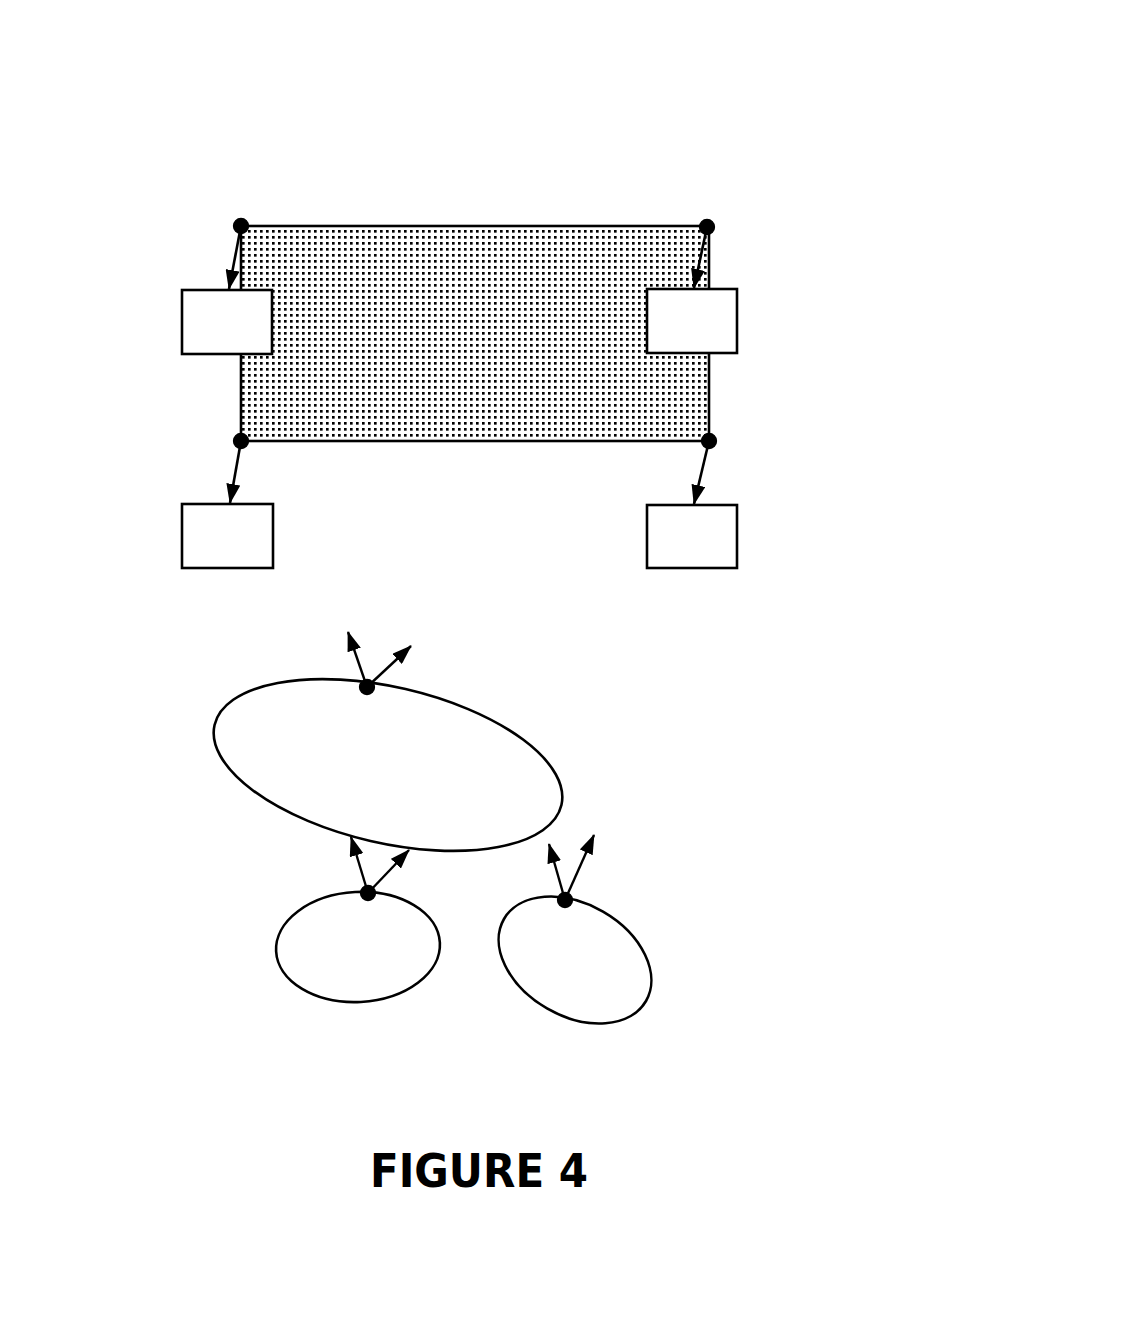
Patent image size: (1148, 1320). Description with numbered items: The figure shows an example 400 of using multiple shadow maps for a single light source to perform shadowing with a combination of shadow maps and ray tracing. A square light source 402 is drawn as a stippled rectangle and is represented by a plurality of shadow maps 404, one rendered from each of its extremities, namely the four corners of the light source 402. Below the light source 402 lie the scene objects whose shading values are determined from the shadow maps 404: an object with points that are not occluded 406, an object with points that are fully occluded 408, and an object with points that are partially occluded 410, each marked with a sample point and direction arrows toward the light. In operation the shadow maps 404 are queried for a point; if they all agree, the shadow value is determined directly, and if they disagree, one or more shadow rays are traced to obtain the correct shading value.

The example 400 is at (870, 103).
The light source 402 is at (418, 216).
The shadow maps 404 is at (167, 343).
The objects with points that are not occluded 406 is at (300, 669).
The objects with points that are fully occluded 408 is at (311, 884).
The objects with points that are partially occluded 410 is at (632, 902).